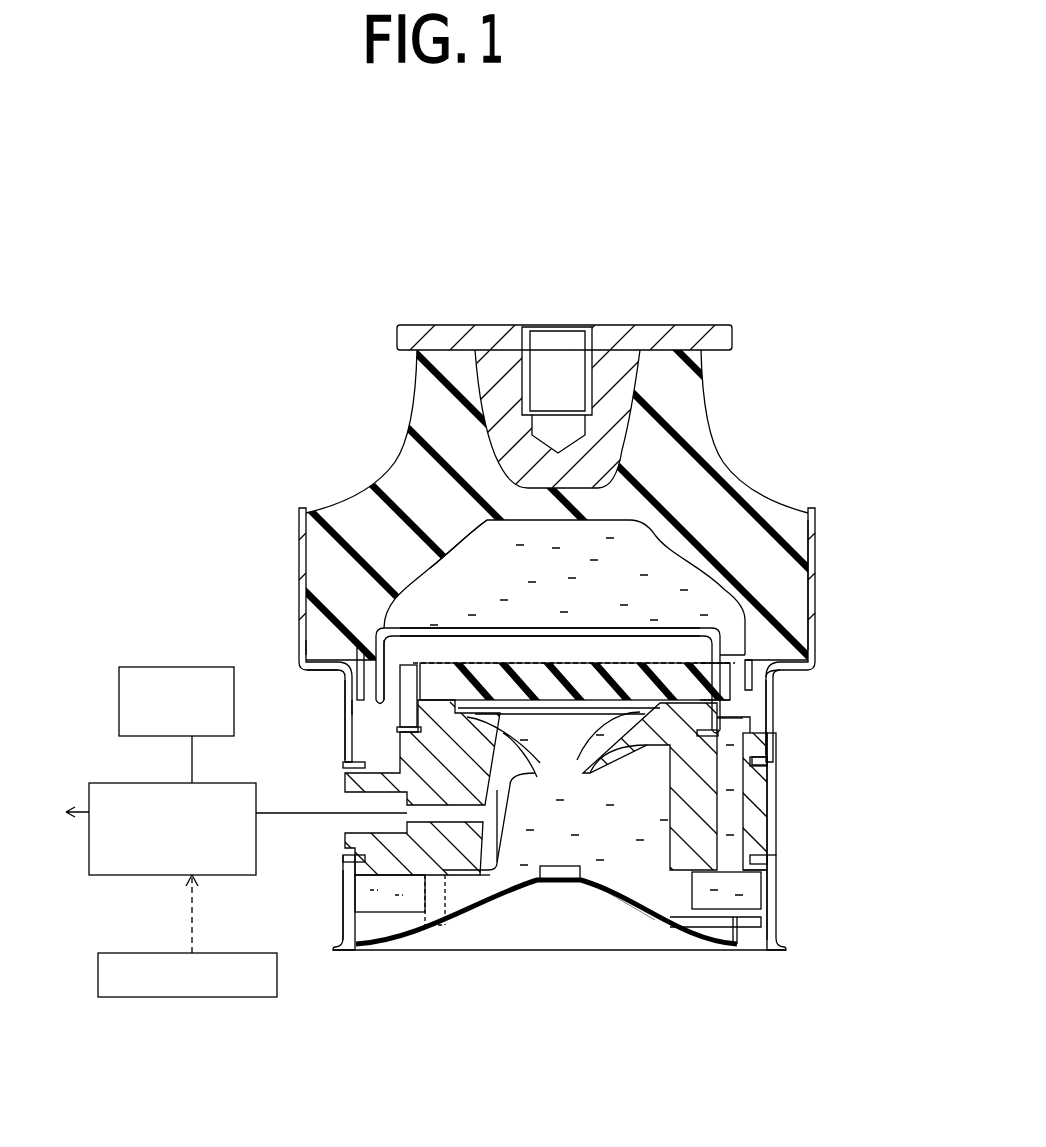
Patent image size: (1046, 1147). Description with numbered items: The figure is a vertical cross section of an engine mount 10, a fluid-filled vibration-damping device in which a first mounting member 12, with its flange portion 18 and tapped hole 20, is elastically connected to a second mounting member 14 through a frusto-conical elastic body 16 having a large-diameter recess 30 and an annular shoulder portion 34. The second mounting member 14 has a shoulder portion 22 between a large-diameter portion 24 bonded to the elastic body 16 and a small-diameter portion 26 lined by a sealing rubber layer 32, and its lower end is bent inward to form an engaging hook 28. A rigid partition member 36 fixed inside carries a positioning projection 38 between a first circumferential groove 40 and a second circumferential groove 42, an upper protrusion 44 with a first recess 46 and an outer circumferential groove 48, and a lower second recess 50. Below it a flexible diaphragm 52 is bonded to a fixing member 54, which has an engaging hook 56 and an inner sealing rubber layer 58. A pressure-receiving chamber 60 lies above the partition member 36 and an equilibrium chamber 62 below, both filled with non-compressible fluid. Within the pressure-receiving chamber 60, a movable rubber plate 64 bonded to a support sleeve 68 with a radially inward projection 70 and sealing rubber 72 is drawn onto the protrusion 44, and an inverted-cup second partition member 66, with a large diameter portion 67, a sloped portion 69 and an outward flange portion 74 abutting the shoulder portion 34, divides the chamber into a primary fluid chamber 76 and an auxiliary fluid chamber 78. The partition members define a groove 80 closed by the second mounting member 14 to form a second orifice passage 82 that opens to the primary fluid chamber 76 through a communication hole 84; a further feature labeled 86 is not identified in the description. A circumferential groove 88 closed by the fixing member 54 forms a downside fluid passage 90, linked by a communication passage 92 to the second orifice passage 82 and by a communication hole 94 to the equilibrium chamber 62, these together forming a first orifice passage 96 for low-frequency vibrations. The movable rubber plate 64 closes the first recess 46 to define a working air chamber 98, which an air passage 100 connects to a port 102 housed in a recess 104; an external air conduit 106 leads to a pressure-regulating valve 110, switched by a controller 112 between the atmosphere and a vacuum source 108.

The engine mount 10 is at (565, 573).
The first mounting member 12 is at (561, 371).
The second mounting member 14 is at (571, 647).
The elastic body 16 is at (575, 573).
The flange portion 18 is at (576, 294).
The tapped hole 20 is at (557, 343).
The shoulder portion 22 is at (829, 683).
The large-diameter portion 24 is at (858, 576).
The small-diameter portion 26 is at (809, 717).
The engaging hook 28 is at (797, 768).
The large-diameter recess 30 is at (403, 493).
The sealing rubber layer 32 is at (301, 690).
The annular shoulder portion 34 is at (281, 634).
The partition member 36 is at (598, 864).
The positioning projection 38 is at (725, 793).
The first circumferential groove 40 is at (311, 777).
The second circumferential groove 42 is at (318, 886).
The protrusion 44 is at (437, 656).
The first recess 46 is at (425, 791).
The outer circumferential groove 48 is at (318, 733).
The second recess 50 is at (632, 947).
The flexible diaphragm 52 is at (546, 904).
The fixing member 54 is at (765, 893).
The engaging hook 56 is at (650, 787).
The sealing rubber layer 58 is at (806, 908).
The pressure-receiving chamber 60 is at (608, 547).
The equilibrium chamber 62 is at (594, 832).
The movable rubber plate 64 is at (642, 579).
The second partition member 66 is at (564, 587).
The large diameter portion 67 is at (283, 656).
The support sleeve 68 is at (411, 642).
The sloped portion 69 is at (747, 577).
The radially inward projection 70 is at (567, 751).
The sealing rubber 72 is at (786, 660).
The outward flange portion 74 is at (303, 638).
The primary fluid chamber 76 is at (597, 494).
The auxiliary fluid chamber 78 is at (597, 521).
The groove 80 is at (792, 743).
The second orifice passage 82 is at (801, 744).
The communication hole 84 is at (796, 642).
The seal lip 86 is at (307, 717).
The circumferential groove 88 is at (709, 959).
The downside fluid passage 90 is at (814, 852).
The communication passage 92 is at (805, 790).
The communication hole 94 is at (462, 946).
The first orifice passage 96 is at (821, 805).
The working air chamber 98 is at (559, 730).
The air passage 100 is at (496, 896).
The port 102 is at (400, 939).
The recess 104 is at (340, 938).
The external air conduit 106 is at (331, 851).
The vacuum source 108 is at (174, 678).
The pressure-regulating valve 110 is at (147, 797).
The controller 112 is at (187, 982).